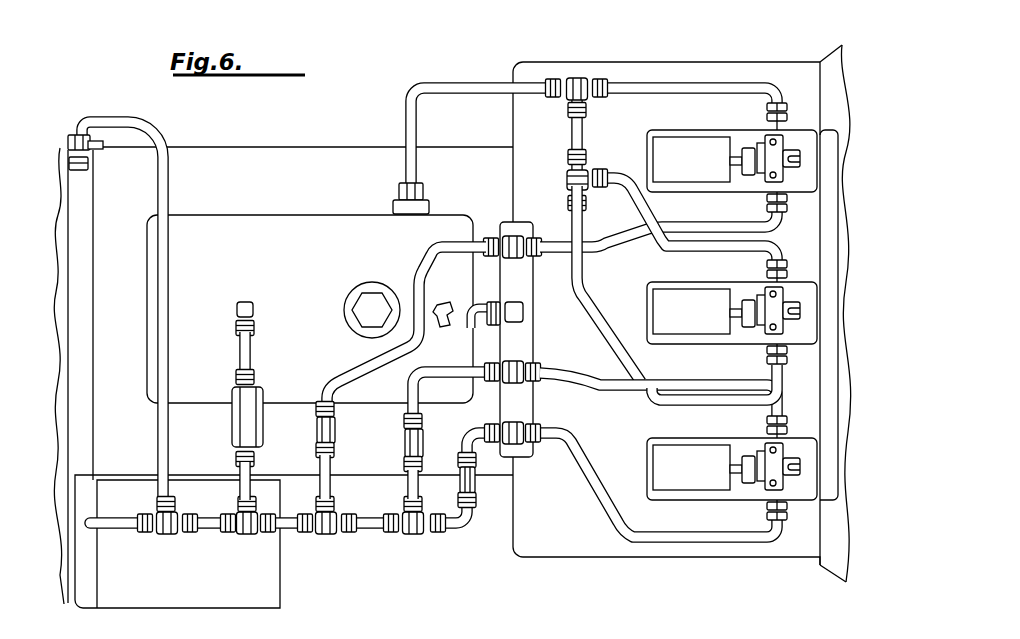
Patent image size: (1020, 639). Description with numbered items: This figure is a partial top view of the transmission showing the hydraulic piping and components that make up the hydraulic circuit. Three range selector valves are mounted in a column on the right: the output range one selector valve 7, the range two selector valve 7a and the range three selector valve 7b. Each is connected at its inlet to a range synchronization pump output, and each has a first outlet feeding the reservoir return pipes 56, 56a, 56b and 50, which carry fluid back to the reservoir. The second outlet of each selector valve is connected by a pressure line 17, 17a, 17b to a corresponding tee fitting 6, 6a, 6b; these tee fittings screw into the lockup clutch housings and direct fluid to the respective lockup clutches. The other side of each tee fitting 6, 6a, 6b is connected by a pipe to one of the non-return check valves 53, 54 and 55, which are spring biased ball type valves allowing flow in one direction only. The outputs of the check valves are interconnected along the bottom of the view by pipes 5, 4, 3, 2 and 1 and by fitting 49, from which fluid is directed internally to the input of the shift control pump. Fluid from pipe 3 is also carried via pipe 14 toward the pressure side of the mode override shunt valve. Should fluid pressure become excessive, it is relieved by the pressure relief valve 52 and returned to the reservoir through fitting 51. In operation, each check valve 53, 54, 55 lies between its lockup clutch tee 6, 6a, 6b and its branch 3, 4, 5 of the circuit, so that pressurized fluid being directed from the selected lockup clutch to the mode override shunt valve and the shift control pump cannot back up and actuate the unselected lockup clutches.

The pipe 1 is at (157, 175).
The pipe 2 is at (207, 532).
The pipe 3 is at (287, 532).
The pipe 4 is at (372, 533).
The pipe 5 is at (455, 533).
The tee fitting 6 is at (518, 383).
The tee fitting 6a is at (514, 447).
The tee fitting 6b is at (513, 240).
The output range 1 selector valve 7 is at (800, 343).
The output range 2 selector valve 7a is at (793, 502).
The output range 3 selector valve 7b is at (800, 193).
The pipe 14 is at (117, 531).
The pressure line 17 is at (598, 388).
The pressure line 17a is at (652, 543).
The pressure line 17b is at (620, 248).
The fitting 49 is at (67, 137).
The reservoir return pipe 50 is at (463, 82).
The fitting 51 is at (240, 300).
The pressure relief valve 52 is at (233, 418).
The check valve 53 is at (317, 426).
The check valve 54 is at (405, 434).
The check valve 55 is at (480, 483).
The reservoir return pipe 56 is at (618, 172).
The reservoir return pipe 56a is at (589, 306).
The reservoir return pipe 56b is at (672, 82).